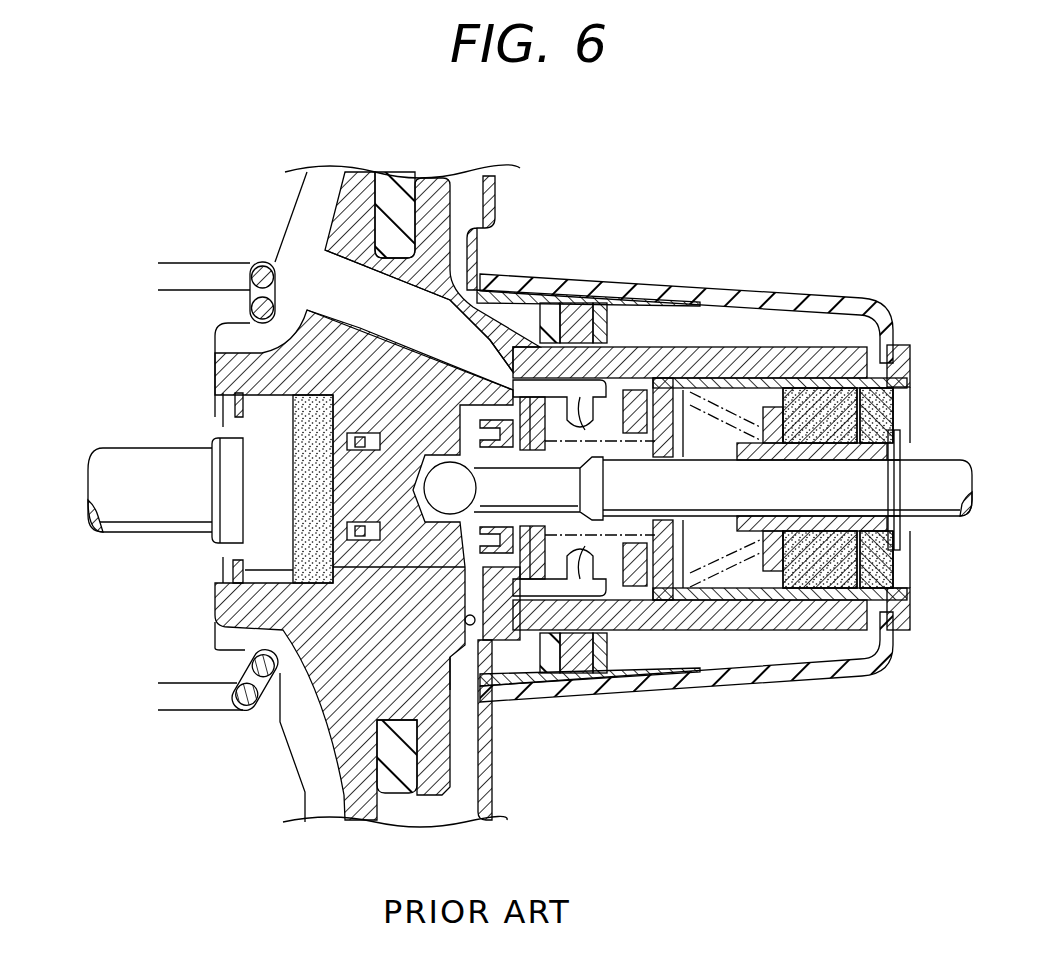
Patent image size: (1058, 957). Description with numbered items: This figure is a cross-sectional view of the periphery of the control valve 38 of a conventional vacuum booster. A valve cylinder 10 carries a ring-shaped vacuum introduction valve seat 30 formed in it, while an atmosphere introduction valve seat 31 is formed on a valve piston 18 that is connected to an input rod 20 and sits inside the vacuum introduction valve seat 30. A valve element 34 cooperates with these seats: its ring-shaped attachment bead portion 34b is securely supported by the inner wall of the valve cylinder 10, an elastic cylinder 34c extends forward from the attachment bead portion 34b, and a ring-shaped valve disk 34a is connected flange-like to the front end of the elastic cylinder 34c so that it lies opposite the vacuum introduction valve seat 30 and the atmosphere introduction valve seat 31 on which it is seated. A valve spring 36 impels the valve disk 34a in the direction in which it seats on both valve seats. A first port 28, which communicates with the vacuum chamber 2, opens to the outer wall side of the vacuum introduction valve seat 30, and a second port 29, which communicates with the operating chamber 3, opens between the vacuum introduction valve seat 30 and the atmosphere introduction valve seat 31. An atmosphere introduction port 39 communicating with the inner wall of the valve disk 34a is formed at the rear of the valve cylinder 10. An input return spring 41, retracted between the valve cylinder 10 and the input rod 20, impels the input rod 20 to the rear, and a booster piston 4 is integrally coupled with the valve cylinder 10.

The vacuum chamber 2 is at (166, 382).
The operating chamber 3 is at (497, 802).
The booster piston 4 is at (327, 742).
The valve cylinder 10 is at (777, 345).
The valve piston 18 is at (418, 590).
The input rod 20 is at (905, 522).
The first port 28 is at (379, 316).
The second port 29 is at (465, 626).
The vacuum introduction valve seat 30 is at (478, 402).
The atmosphere introduction valve seat 31 is at (497, 553).
The valve element 34 is at (599, 534).
The valve disk 34a is at (545, 640).
The attachment bead portion 34b is at (625, 400).
The elastic cylinder 34c is at (600, 410).
The valve spring 36 is at (668, 565).
The control valve 38 is at (545, 392).
The atmosphere introduction port 39 is at (893, 397).
The input return spring 41 is at (735, 565).